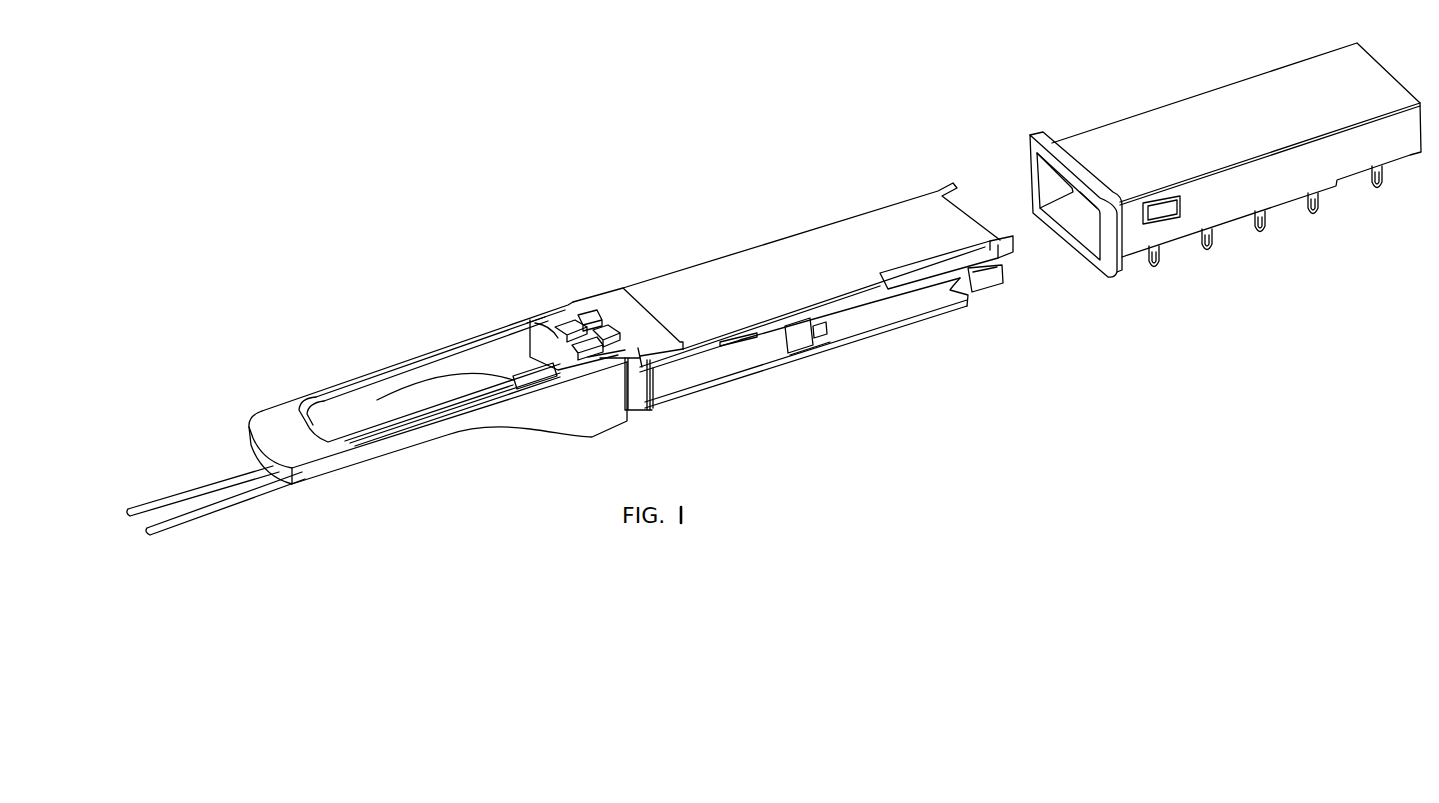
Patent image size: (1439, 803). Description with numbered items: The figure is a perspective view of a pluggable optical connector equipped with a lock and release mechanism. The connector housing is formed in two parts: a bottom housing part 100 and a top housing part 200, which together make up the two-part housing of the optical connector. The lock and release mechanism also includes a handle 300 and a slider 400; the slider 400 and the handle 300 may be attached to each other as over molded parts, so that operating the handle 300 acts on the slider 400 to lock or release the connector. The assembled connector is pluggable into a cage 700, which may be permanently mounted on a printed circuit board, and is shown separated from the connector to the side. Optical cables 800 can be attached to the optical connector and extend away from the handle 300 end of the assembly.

The bottom housing part 100 is at (880, 323).
The top housing part 200 is at (815, 267).
The handle 300 is at (290, 432).
The slider 400 is at (705, 368).
The cage 700 is at (1228, 122).
The optical cables 800 is at (215, 482).